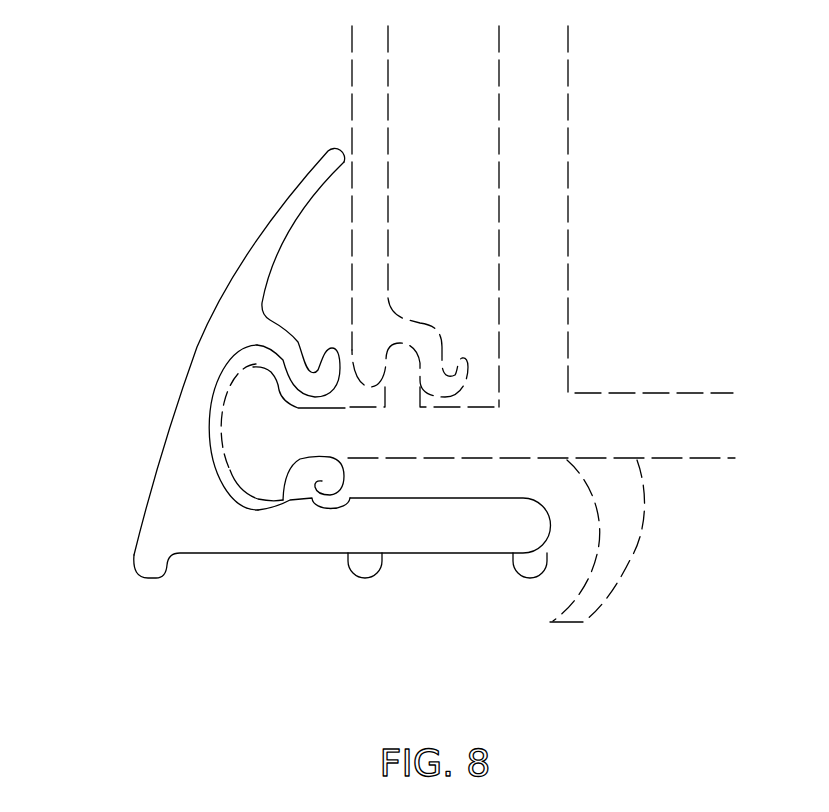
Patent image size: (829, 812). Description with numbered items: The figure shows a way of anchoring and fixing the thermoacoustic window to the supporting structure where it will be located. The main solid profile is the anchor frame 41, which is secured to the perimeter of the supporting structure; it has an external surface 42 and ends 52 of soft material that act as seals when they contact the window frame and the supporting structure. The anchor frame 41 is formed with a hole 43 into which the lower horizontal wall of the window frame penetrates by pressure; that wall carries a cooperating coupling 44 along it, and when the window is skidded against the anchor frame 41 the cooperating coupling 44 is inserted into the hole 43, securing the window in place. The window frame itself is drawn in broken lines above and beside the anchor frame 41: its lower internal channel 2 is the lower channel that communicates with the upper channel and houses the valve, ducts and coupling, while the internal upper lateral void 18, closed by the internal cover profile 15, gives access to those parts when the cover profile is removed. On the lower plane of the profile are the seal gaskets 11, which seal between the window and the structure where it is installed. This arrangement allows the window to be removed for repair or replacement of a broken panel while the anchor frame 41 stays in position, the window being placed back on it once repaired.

The lower internal channel 2 is at (637, 208).
The seal gaskets 11 is at (637, 547).
The internal cover profile 15 is at (353, 87).
The internal upper lateral void 18 is at (430, 131).
The anchor frame 41 is at (147, 578).
The external surface 42 is at (197, 345).
The hole 43 is at (217, 470).
The cooperating coupling 44 is at (260, 428).
The ends 52 is at (365, 578).